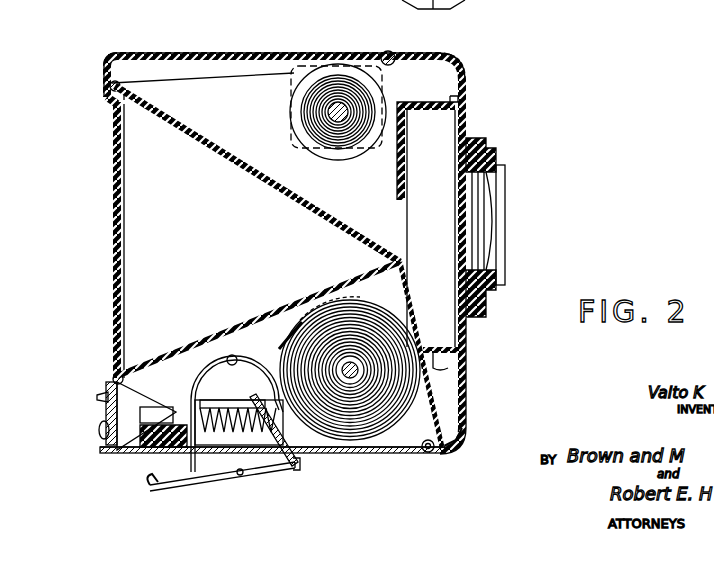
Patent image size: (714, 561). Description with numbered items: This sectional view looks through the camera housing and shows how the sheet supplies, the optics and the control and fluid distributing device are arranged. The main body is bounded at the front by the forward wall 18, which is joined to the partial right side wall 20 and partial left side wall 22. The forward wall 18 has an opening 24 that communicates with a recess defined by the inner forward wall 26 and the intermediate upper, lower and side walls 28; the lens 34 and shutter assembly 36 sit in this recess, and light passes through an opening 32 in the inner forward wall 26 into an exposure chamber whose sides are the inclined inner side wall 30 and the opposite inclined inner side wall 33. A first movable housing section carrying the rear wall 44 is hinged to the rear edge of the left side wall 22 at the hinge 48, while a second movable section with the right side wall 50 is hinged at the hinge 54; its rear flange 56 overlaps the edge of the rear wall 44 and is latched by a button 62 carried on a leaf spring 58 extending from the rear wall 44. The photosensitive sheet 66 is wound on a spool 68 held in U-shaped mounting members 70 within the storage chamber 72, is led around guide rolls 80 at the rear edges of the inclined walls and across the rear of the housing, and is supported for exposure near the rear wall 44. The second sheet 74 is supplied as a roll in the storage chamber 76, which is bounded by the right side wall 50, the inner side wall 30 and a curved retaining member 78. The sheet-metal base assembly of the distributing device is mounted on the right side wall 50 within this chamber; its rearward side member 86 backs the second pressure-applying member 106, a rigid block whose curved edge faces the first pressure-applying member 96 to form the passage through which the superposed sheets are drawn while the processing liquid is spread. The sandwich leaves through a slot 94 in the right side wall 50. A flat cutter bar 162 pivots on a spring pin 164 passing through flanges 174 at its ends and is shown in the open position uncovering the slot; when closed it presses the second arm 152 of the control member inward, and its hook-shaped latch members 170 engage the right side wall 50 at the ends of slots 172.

The forward wall 18 is at (466, 410).
The partial right side wall 20 is at (453, 455).
The partial left side wall 22 is at (453, 63).
The opening 24 is at (463, 343).
The inner forward wall 26 is at (405, 178).
The intermediate upper, lower and side walls 28 is at (423, 97).
The inclined inner side wall 30 is at (250, 318).
The opening 32 is at (400, 262).
The partition wall 33 is at (163, 100).
The lens 34 is at (497, 223).
The shutter assembly 36 is at (423, 148).
The rear wall 44 is at (113, 232).
The hinge 48 is at (388, 52).
The right side wall 50 is at (130, 460).
The hinge 54 is at (428, 452).
The rear flange 56 is at (100, 408).
The leaf spring 58 is at (97, 397).
The button 62 is at (100, 428).
The photosensitive sheet 66 is at (206, 76).
The spool 68 is at (338, 110).
The U-shaped mounting members 70 is at (293, 70).
The storage chamber 72 is at (263, 107).
The second sheet 74 is at (350, 410).
The storage chamber 76 is at (397, 435).
The curved retaining member 78 is at (433, 392).
The guide rolls 80 is at (108, 107).
The side member 86 is at (115, 455).
The slot 94 is at (200, 470).
The pin 96 is at (206, 350).
The second pressure-applying member 106 is at (150, 437).
The second arm 152 is at (266, 455).
The cutter bar 162 is at (207, 495).
The spring pin 164 is at (300, 462).
The hook-shaped latch members 170 is at (150, 478).
The slots 172 is at (481, 0).
The flanges 174 is at (240, 476).